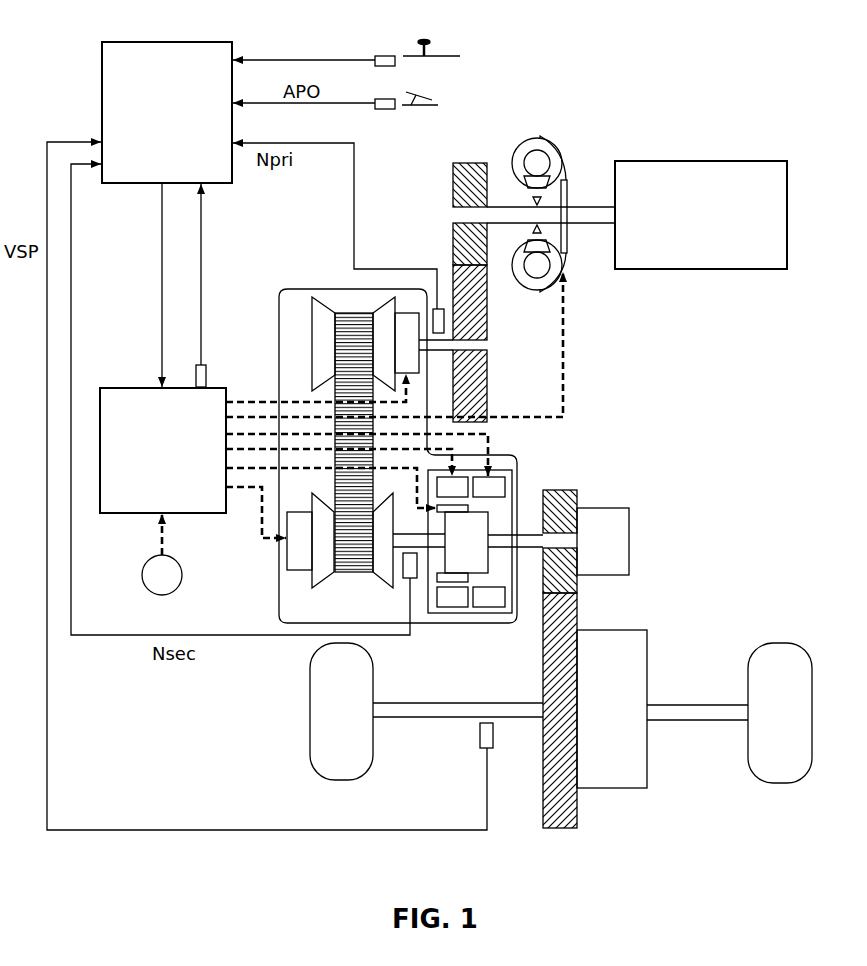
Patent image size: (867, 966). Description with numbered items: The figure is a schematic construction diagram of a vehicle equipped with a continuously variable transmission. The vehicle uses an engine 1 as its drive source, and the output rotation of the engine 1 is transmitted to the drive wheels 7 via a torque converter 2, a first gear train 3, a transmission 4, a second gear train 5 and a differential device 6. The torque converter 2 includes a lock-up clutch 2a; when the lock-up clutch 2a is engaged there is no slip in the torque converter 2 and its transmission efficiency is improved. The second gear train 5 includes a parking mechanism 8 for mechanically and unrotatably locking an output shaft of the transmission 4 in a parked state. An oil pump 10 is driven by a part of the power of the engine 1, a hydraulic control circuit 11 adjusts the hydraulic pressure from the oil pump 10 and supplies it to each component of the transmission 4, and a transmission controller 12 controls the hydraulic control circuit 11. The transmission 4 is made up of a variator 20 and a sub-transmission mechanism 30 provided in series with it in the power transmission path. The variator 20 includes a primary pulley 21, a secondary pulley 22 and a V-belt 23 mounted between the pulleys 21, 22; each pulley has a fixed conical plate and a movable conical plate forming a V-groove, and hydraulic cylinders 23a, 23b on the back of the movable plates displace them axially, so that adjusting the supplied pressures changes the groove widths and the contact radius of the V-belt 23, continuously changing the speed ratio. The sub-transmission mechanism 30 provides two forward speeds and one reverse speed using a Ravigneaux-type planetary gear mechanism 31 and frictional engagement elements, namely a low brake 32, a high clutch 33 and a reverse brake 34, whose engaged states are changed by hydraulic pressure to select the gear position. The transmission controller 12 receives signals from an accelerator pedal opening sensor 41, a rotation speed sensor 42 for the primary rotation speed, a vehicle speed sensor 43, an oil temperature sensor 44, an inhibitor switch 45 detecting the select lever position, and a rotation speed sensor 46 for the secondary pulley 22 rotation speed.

The engine 1 is at (774, 176).
The torque converter 2 is at (551, 211).
The lock-up clutch 2a is at (566, 238).
The first gear train 3 is at (471, 156).
The transmission 4 is at (320, 294).
The second gear train 5 is at (560, 840).
The differential device 6 is at (610, 779).
The drive wheels 7 is at (342, 768).
The parking mechanism 8 is at (613, 535).
The oil pump 10 is at (142, 566).
The hydraulic control circuit 11 is at (118, 390).
The transmission controller 12 is at (218, 45).
The variator 20 is at (297, 307).
The primary pulley 21 is at (323, 348).
The secondary pulley 22 is at (322, 566).
The V-belt 23 is at (345, 305).
The hydraulic cylinder 23a is at (405, 325).
The hydraulic cylinder 23b is at (292, 548).
The sub-transmission mechanism 30 is at (518, 522).
The Ravigneaux-type planetary gear mechanism 31 is at (470, 538).
The low brake 32 is at (455, 490).
The high clutch 33 is at (454, 580).
The reverse brake 34 is at (488, 492).
The accelerator pedal opening sensor 41 is at (386, 109).
The rotation speed sensor 42 is at (437, 318).
The vehicle speed sensor 43 is at (480, 737).
The oil temperature sensor 44 is at (204, 376).
The inhibitor switch 45 is at (386, 56).
The rotation speed sensor 46 is at (410, 566).